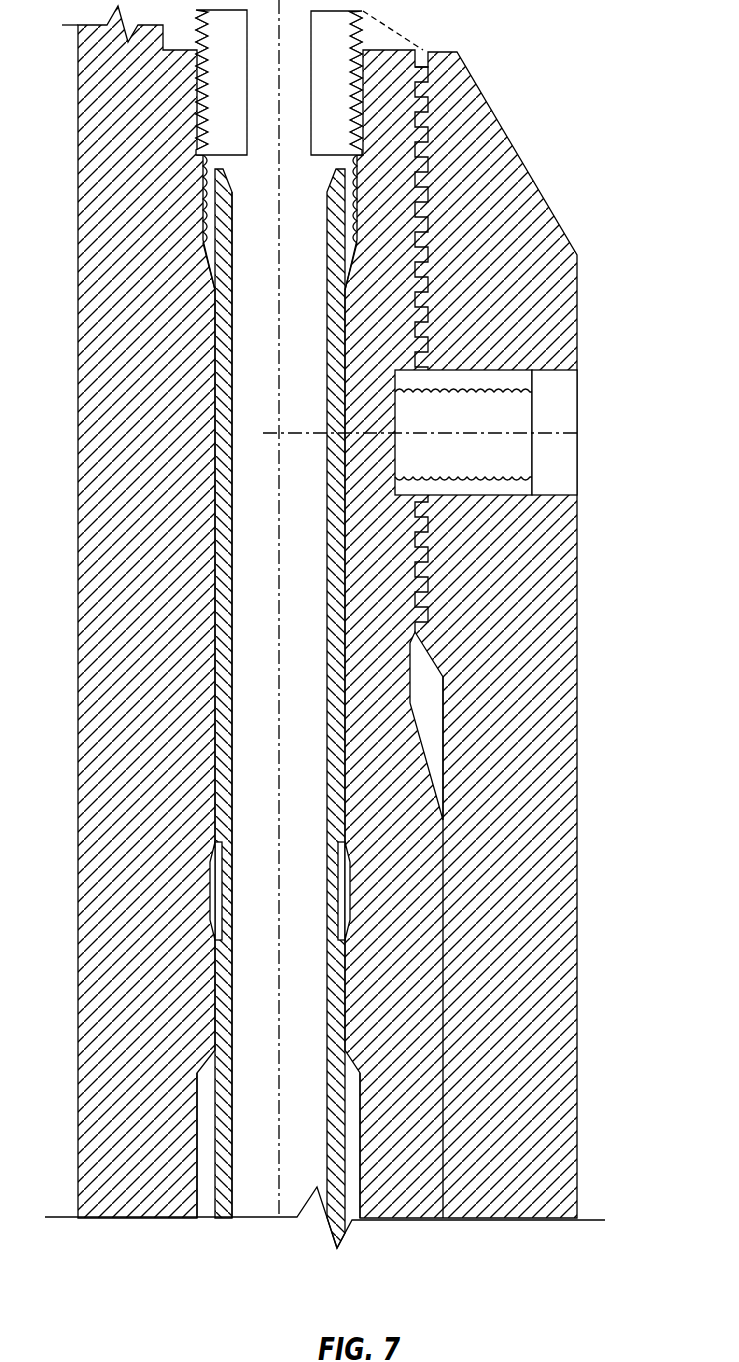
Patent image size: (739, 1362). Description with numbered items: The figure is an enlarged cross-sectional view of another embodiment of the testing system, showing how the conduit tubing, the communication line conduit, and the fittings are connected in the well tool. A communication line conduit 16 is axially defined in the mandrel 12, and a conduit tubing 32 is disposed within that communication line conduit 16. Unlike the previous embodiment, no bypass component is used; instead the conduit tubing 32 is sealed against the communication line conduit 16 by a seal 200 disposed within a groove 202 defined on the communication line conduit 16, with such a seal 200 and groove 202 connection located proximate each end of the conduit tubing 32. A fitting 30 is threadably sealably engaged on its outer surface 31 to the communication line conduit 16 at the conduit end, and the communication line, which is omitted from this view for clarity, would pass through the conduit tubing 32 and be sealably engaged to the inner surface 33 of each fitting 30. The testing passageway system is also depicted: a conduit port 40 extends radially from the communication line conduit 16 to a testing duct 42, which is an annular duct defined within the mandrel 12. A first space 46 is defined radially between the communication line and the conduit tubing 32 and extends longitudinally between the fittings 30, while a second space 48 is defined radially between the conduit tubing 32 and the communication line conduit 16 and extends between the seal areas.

The mandrel 12 is at (411, 885).
The communication line conduit 16 is at (214, 688).
The fitting 30 is at (180, 175).
The outer surface of fitting 31 is at (197, 122).
The conduit tubing 32 is at (233, 520).
The inner surface of fitting 33 is at (247, 58).
The conduit port 40 is at (457, 467).
The testing duct 42 is at (570, 412).
The first space 46 is at (273, 349).
The second space 48 is at (205, 1140).
The seal 200 is at (215, 845).
The groove 202 is at (210, 900).